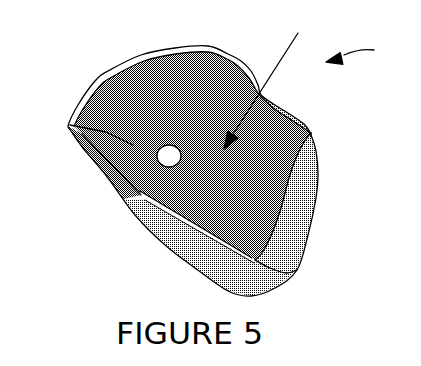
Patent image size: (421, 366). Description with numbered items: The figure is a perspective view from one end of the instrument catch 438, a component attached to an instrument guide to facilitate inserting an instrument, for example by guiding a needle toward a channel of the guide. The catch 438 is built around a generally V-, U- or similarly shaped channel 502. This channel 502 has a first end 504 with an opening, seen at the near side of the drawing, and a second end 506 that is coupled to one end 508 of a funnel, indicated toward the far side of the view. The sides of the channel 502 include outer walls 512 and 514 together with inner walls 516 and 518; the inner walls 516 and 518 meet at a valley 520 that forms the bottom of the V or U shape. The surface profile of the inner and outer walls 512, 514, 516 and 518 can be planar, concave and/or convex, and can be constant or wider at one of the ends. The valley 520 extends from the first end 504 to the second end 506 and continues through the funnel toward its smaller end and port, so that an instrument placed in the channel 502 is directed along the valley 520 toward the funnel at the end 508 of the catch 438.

The channel 502 is at (253, 90).
The first end 504 is at (291, 185).
The second end 506 is at (280, 86).
The end of funnel 508 is at (230, 51).
The outer wall 512 is at (128, 205).
The outer wall 514 is at (284, 110).
The inner wall 516 is at (72, 101).
The inner wall 518 is at (303, 122).
The valley 520 is at (286, 266).
The instrument catch 438 is at (368, 53).